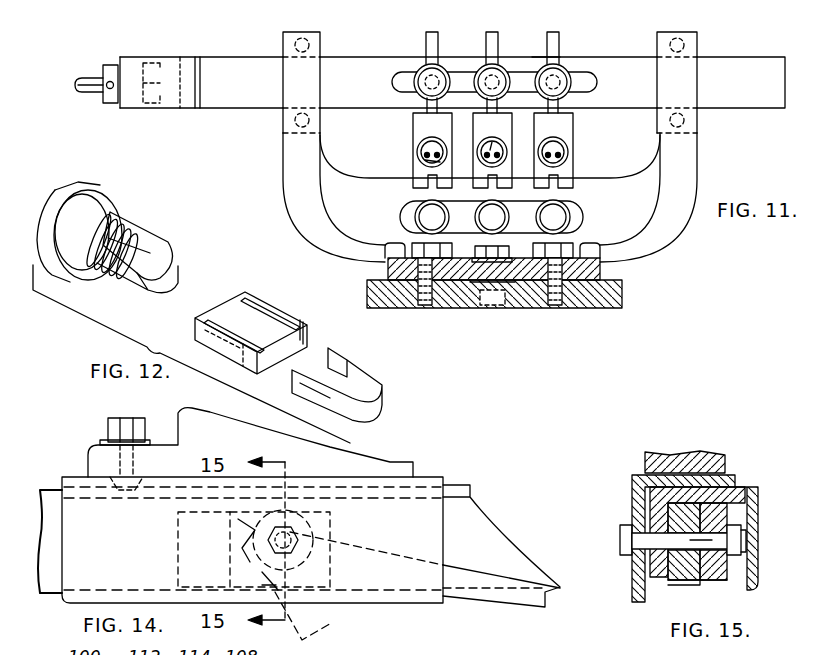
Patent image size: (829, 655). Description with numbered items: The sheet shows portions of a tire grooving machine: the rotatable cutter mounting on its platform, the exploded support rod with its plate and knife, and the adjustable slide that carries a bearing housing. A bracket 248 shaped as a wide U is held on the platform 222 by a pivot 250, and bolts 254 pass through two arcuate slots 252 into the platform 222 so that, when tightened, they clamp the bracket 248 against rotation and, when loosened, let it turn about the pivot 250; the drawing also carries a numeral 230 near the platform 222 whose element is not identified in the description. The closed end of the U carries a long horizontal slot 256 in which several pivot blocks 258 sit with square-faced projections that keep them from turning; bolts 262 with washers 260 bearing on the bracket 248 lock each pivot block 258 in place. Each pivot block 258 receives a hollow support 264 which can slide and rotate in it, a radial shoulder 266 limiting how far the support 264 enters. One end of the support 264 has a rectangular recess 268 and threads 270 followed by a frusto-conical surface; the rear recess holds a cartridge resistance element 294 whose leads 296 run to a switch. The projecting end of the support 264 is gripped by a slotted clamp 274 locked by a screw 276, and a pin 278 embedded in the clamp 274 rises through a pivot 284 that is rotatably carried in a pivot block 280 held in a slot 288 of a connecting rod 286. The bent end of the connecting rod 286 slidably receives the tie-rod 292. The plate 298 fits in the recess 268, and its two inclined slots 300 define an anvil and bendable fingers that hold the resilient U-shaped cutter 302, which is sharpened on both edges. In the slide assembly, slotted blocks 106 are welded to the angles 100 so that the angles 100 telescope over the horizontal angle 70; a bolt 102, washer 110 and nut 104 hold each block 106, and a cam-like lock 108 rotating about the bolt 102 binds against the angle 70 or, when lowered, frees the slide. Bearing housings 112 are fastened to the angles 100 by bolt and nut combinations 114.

In FIG. 14, the horizontal angle 70 is at (496, 542).
In FIG. 15, the horizontal angle 70 is at (760, 546).
In FIG. 14, the angle 100 is at (432, 477).
In FIG. 15, the angle 100 is at (632, 478).
In FIG. 14, the bolt 102 is at (300, 542).
In FIG. 15, the bolt 102 is at (622, 548).
In FIG. 15, the nut 104 is at (752, 525).
In FIG. 14, the slotted block 106 is at (178, 528).
In FIG. 15, the slotted block 106 is at (678, 582).
In FIG. 14, the cam-like lock 108 is at (335, 622).
In FIG. 15, the cam-like lock 108 is at (650, 503).
In FIG. 15, the washer 110 is at (735, 556).
In FIG. 14, the bearing housing 112 is at (90, 445).
In FIG. 15, the bearing housing 112 is at (705, 455).
In FIG. 14, the bolt and nut combination 114 is at (112, 418).
In FIG. 11, the platform 222 is at (615, 308).
In FIG. 11, the plate 230 is at (497, 304).
In FIG. 11, the bracket 248 is at (656, 235).
In FIG. 11, the pivot 250 is at (492, 297).
In FIG. 11, the arcuate slot 252 is at (388, 268).
In FIG. 11, the bolt 254 is at (425, 306).
In FIG. 11, the horizontally directed slot 256 is at (588, 218).
In FIG. 11, the pivot block 258 is at (410, 208).
In FIG. 11, the washer 260 is at (462, 238).
In FIG. 11, the bolt 262 is at (422, 220).
In FIG. 11, the support 264 is at (425, 162).
In FIG. 12, the support 264 is at (68, 190).
In FIG. 12, the shoulder 266 is at (110, 192).
In FIG. 12, the recess 268 is at (160, 268).
In FIG. 12, the threads 270 is at (118, 215).
In FIG. 11, the slotted clamp 274 is at (412, 132).
In FIG. 11, the screw 276 is at (565, 180).
In FIG. 11, the pin 278 is at (492, 32).
In FIG. 11, the pivot block 280 is at (562, 68).
In FIG. 11, the pivot 284 is at (548, 66).
In FIG. 11, the connecting rod 286 is at (232, 60).
In FIG. 11, the slot 288 is at (590, 82).
In FIG. 11, the tie-rod 292 is at (86, 95).
In FIG. 11, the resistance element 294 is at (545, 145).
In FIG. 11, the leads 296 is at (432, 150).
In FIG. 12, the plate 298 is at (232, 300).
In FIG. 12, the slots 300 is at (258, 342).
In FIG. 12, the cutter 302 is at (383, 410).